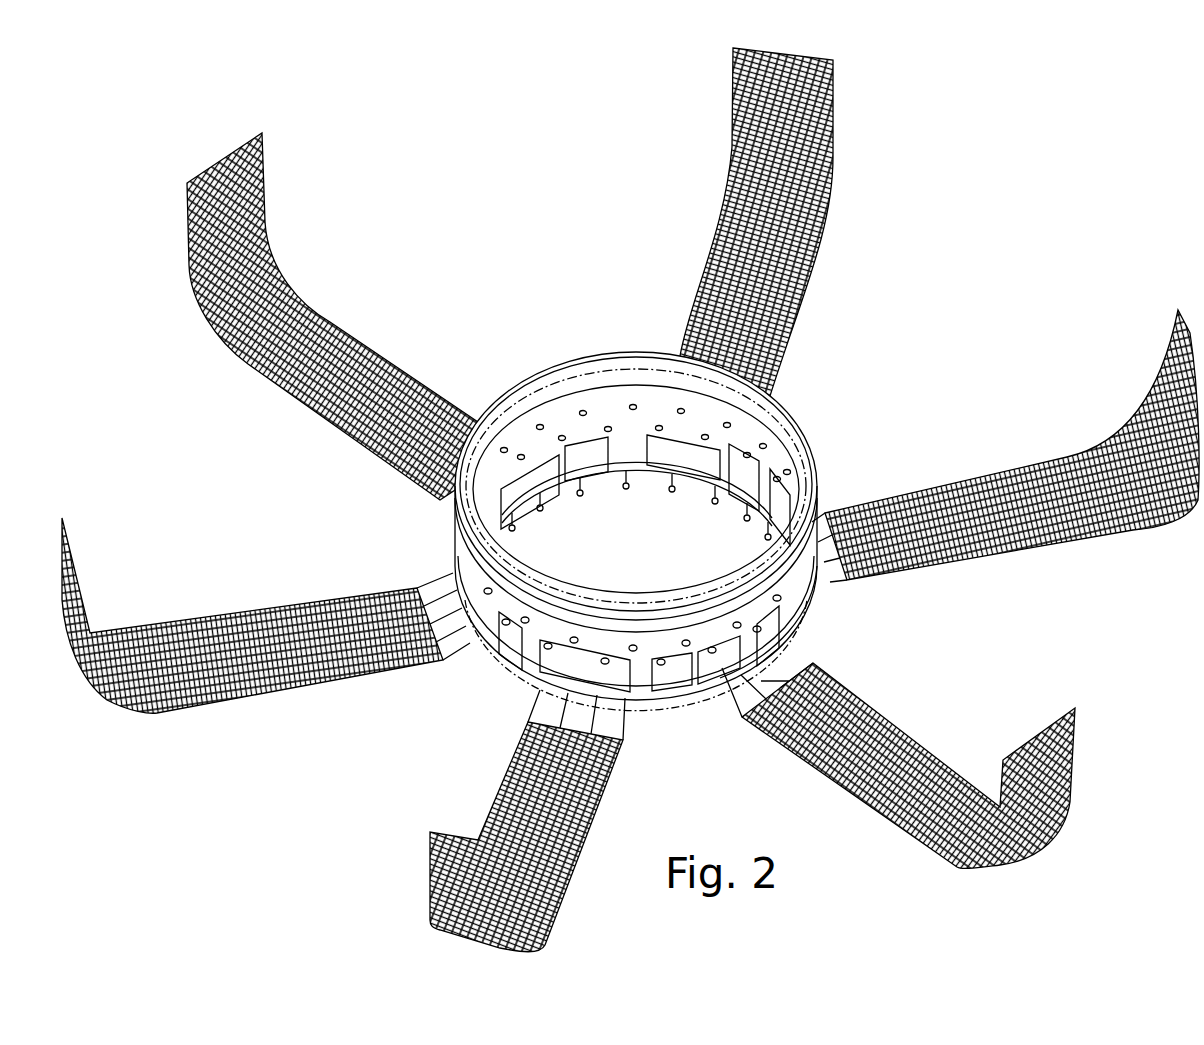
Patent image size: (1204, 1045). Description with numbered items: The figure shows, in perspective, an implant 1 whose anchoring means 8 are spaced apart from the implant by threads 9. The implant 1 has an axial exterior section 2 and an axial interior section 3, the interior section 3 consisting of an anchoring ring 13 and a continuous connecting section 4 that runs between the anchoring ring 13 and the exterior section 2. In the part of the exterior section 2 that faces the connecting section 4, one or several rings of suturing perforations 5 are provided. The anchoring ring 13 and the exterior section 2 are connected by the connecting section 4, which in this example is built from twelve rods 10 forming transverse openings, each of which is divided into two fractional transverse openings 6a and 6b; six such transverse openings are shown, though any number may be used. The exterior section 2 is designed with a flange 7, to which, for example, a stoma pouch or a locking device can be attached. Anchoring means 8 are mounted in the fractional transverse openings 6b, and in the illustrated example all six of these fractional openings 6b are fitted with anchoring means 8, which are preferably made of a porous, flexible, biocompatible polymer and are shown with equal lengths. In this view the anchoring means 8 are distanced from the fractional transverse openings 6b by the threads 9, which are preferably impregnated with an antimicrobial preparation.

The implant 1 is at (466, 269).
The axial exterior section 2 is at (620, 382).
The axial interior section 3 is at (697, 693).
The connecting section 4 is at (630, 690).
The suturing perforations 5 is at (572, 417).
The fractional transverse opening 6a is at (688, 482).
The fractional transverse opening 6b is at (633, 477).
The flange 7 is at (763, 393).
The anchoring means 8 is at (980, 482).
The threads 9 is at (540, 713).
The rods 10 is at (797, 627).
The anchoring ring 13 is at (668, 693).